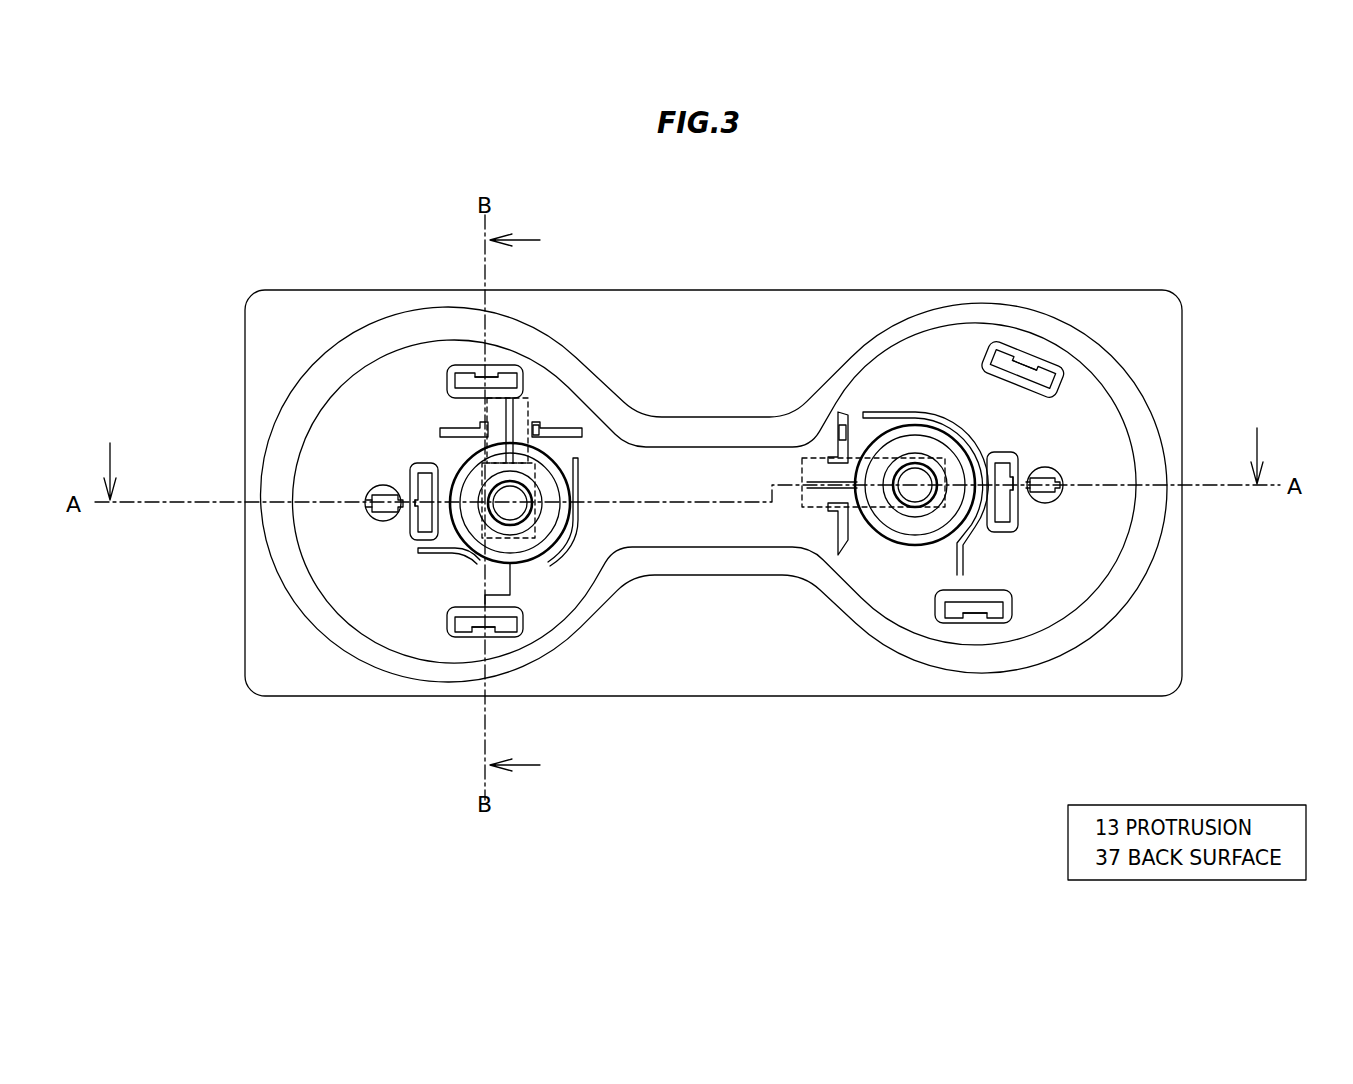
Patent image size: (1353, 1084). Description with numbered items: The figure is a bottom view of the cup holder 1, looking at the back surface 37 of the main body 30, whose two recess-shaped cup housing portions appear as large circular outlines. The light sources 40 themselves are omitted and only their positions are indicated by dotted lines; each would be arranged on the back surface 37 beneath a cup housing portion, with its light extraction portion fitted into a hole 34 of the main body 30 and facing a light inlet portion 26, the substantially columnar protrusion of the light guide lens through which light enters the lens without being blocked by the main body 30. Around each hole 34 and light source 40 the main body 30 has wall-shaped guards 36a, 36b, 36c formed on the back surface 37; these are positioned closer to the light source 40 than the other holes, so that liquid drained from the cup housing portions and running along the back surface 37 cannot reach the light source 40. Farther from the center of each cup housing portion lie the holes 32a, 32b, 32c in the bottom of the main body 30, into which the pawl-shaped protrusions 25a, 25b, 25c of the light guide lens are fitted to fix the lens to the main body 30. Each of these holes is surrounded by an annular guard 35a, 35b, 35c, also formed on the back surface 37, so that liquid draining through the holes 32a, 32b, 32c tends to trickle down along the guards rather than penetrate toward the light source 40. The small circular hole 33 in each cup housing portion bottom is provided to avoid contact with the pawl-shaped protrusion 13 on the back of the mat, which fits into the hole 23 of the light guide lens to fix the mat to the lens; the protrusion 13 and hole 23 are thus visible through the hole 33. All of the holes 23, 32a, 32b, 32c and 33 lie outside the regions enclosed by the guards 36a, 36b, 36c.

The cup holder 1 is at (1070, 210).
The main body 30 is at (1169, 273).
The back surface 37 is at (1100, 562).
The light inlet portion 26 is at (542, 565).
The light source 40 is at (525, 495).
The guard 36a is at (425, 550).
The guard 36b is at (577, 428).
The guard 36c is at (443, 428).
The hole 34 is at (517, 443).
The guard 35a is at (458, 628).
The guard 35b is at (412, 545).
The guard 35c is at (517, 367).
The hole 32a is at (517, 637).
The hole 32b is at (406, 466).
The hole 32c is at (457, 368).
The protrusion 25a is at (470, 640).
The protrusion 25b is at (416, 528).
The protrusion 25c is at (463, 377).
The hole 33 is at (372, 488).
The protrusion 13 is at (385, 516).
The hole 23 is at (375, 492).